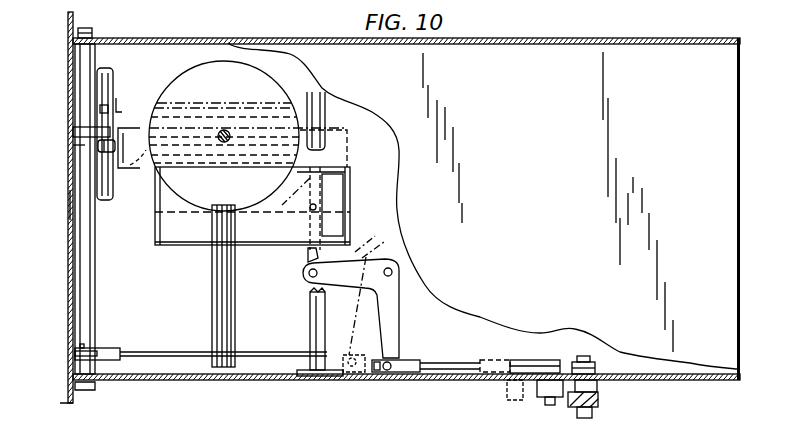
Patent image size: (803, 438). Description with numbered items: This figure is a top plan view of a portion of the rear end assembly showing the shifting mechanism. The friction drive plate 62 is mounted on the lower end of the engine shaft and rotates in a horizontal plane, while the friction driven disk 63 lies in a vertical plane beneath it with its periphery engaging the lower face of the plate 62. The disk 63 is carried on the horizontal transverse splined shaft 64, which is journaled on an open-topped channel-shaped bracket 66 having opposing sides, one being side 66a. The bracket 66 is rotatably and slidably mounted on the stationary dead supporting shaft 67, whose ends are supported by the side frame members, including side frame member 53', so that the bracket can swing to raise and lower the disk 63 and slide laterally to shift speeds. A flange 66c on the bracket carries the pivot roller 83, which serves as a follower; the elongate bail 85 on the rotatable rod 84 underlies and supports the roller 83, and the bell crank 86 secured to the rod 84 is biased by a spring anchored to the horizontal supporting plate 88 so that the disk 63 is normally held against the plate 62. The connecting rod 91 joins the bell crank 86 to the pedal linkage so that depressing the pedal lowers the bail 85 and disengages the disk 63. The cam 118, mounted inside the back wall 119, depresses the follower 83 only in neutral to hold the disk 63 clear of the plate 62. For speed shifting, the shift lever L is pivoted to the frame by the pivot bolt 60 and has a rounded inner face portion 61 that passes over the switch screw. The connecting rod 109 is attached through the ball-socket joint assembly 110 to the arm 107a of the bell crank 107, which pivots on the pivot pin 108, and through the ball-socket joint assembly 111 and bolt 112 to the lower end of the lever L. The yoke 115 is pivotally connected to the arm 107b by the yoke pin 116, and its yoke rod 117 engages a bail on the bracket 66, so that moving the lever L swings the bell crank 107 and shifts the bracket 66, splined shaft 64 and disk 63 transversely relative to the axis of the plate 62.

The side frame member 53' is at (406, 28).
The rotatable rod 84 is at (86, 262).
The elongate bail 85 is at (113, 80).
The pivot roller 83 is at (100, 145).
The friction driven disk 63 is at (121, 113).
The cam 118 is at (82, 144).
The back wall 119 is at (70, 206).
The flange 66c is at (135, 168).
The bell crank 86 is at (74, 352).
The connecting rod 91 is at (191, 351).
The friction drive plate 62 is at (236, 90).
The splined shaft 64 is at (214, 310).
The bracket side 66a is at (162, 222).
The bracket 66 is at (352, 152).
The yoke rod 117 is at (310, 226).
The dead supporting shaft 67 is at (309, 320).
The bell crank 107 is at (401, 263).
The pivot pin 108 is at (393, 272).
The yoke pin 116 is at (309, 274).
The yoke 115 is at (308, 258).
The bell crank arm 107b is at (378, 241).
The bell crank arm 107a is at (398, 328).
The ball-socket joint assembly 110 is at (395, 360).
The connecting rod 109 is at (440, 361).
The ball-socket joint assembly 111 is at (518, 368).
The bolt 112 is at (552, 406).
The rounded inner face portion 61 is at (597, 378).
The shift lever L is at (598, 400).
The pivot bolt 60 is at (588, 414).
The horizontal supporting plate 88 is at (578, 209).